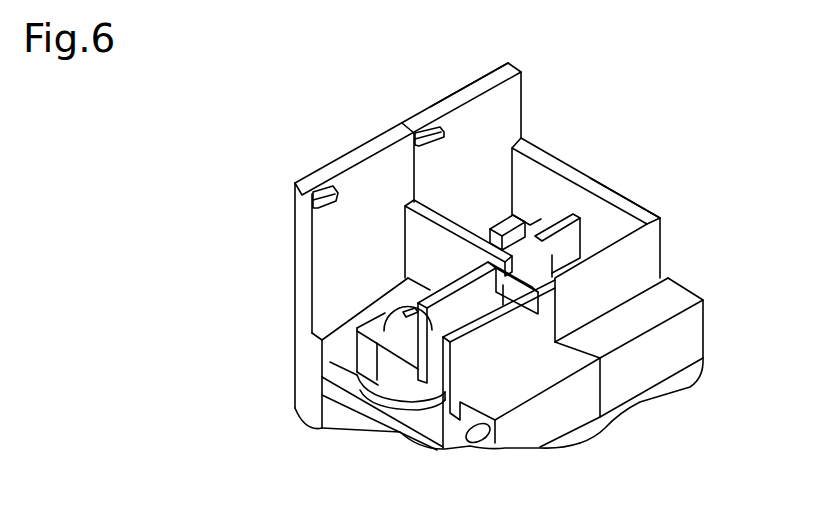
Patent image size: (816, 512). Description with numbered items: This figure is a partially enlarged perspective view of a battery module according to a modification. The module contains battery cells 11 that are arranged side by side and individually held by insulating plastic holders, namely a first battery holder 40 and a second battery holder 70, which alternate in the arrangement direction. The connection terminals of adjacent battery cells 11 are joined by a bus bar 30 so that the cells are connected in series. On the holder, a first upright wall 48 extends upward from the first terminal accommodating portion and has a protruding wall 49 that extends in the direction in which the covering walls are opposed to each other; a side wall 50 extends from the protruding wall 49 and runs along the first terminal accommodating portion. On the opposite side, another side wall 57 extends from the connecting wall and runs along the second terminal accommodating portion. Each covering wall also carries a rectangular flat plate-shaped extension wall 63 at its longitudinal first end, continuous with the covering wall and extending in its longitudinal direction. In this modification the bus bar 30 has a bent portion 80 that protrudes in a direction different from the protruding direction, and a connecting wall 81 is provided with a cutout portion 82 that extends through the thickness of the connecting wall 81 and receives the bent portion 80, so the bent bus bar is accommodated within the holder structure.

The battery cell 11 is at (320, 406).
The bus bar 30 is at (415, 366).
The first battery holder 40 is at (366, 142).
The first upright wall 48 is at (632, 194).
The protruding wall 49 is at (580, 192).
The side wall 50 is at (635, 258).
The side wall 57 is at (478, 362).
The extension wall 63 is at (318, 248).
The second battery holder 70 is at (482, 80).
The bent portion 80 is at (514, 286).
The connecting wall 81 is at (452, 246).
The cutout portion 82 is at (500, 248).